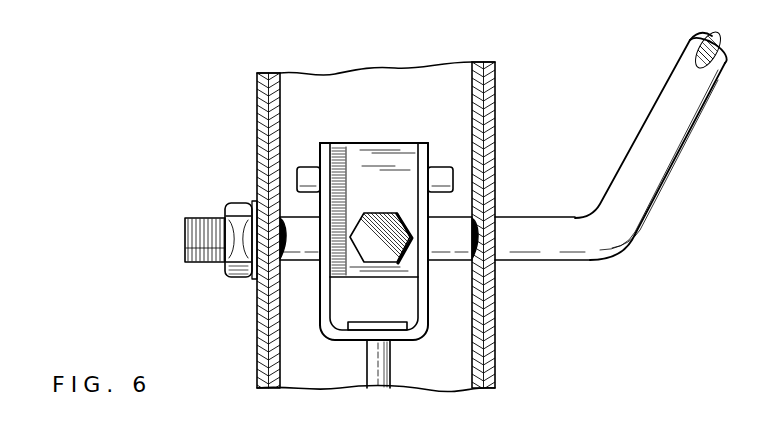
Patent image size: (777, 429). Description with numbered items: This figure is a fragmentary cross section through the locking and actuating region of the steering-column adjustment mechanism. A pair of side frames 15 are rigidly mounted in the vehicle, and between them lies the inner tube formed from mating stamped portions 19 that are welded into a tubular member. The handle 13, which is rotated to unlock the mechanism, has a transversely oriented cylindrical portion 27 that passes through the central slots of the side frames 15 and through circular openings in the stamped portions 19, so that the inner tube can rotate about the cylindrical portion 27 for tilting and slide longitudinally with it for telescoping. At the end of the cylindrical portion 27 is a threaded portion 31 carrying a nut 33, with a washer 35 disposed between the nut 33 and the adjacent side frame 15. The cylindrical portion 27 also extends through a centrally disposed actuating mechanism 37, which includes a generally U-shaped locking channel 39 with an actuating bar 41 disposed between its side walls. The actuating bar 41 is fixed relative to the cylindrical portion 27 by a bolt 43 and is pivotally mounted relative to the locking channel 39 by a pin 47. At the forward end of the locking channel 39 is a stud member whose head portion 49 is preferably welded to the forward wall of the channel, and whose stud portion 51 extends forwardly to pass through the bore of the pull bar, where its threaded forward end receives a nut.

The handle 13 is at (670, 152).
The side frames 15 is at (260, 78).
The stamped portions 19 is at (281, 75).
The cylindrical portion 27 is at (458, 262).
The threaded portion 31 is at (202, 220).
The nut 33 is at (233, 205).
The washer 35 is at (254, 280).
The actuating mechanism 37 is at (350, 132).
The locking channel 39 is at (322, 150).
The actuating bar 41 is at (388, 150).
The bolt 43 is at (394, 201).
The pin 47 is at (454, 176).
The head portion 49 is at (392, 325).
The stud portion 51 is at (380, 354).